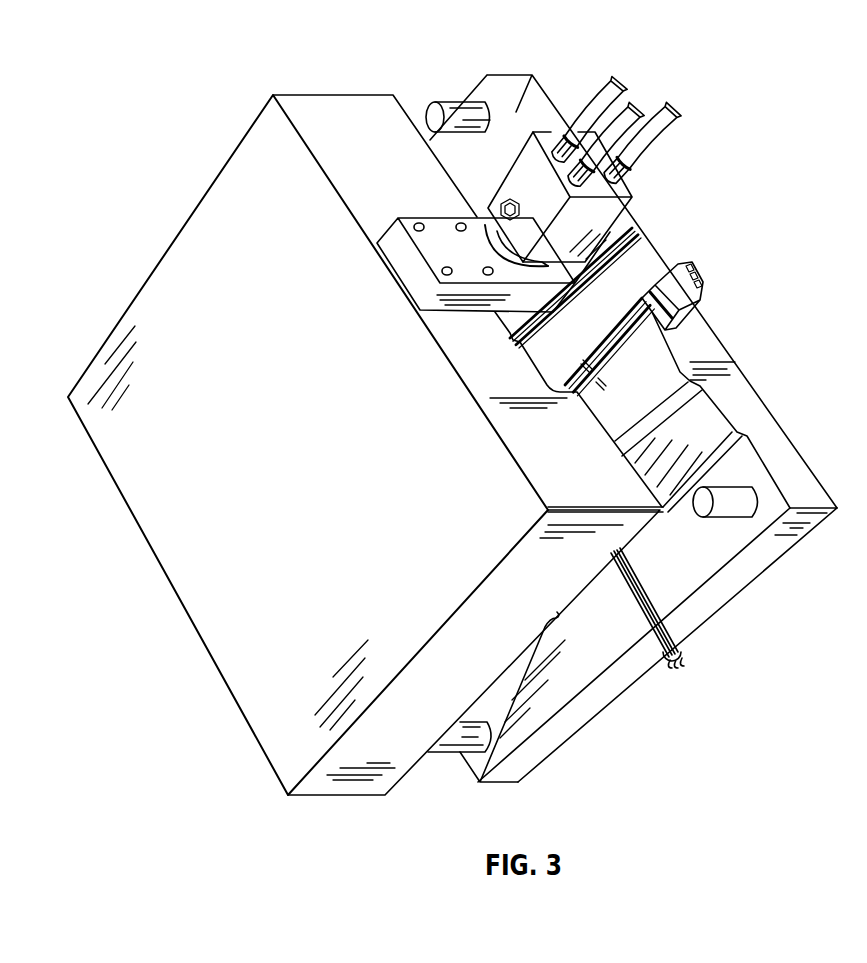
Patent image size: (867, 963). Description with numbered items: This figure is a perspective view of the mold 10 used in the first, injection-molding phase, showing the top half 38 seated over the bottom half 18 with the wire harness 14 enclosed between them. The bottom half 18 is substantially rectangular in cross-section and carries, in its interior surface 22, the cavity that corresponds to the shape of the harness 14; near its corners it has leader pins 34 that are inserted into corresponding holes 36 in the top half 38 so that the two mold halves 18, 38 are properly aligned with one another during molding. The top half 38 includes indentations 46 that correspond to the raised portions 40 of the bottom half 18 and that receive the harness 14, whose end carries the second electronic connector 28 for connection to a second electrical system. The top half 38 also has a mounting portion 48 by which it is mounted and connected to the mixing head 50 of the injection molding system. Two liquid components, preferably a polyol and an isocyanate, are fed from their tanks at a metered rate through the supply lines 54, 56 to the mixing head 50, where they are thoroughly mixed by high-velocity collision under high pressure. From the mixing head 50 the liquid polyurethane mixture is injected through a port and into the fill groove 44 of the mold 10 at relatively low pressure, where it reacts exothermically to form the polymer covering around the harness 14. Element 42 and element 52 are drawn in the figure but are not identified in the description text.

The mold 10 is at (436, 774).
The harness 14 is at (675, 660).
The bottom half 18 is at (728, 305).
The interior surface 22 is at (713, 562).
The second electronic connector 28 is at (670, 277).
The leader pins 34 is at (747, 495).
The holes 36 is at (405, 103).
The top half 38 is at (255, 703).
The raised portions 40 is at (648, 368).
The slide member 42 is at (572, 677).
The fill groove 44 is at (605, 255).
The indentations 46 is at (565, 383).
The mounting portion 48 is at (437, 263).
The mixing head 50 is at (512, 187).
The clamp 52 is at (487, 247).
The supply line 54 is at (598, 107).
The supply line 56 is at (627, 125).